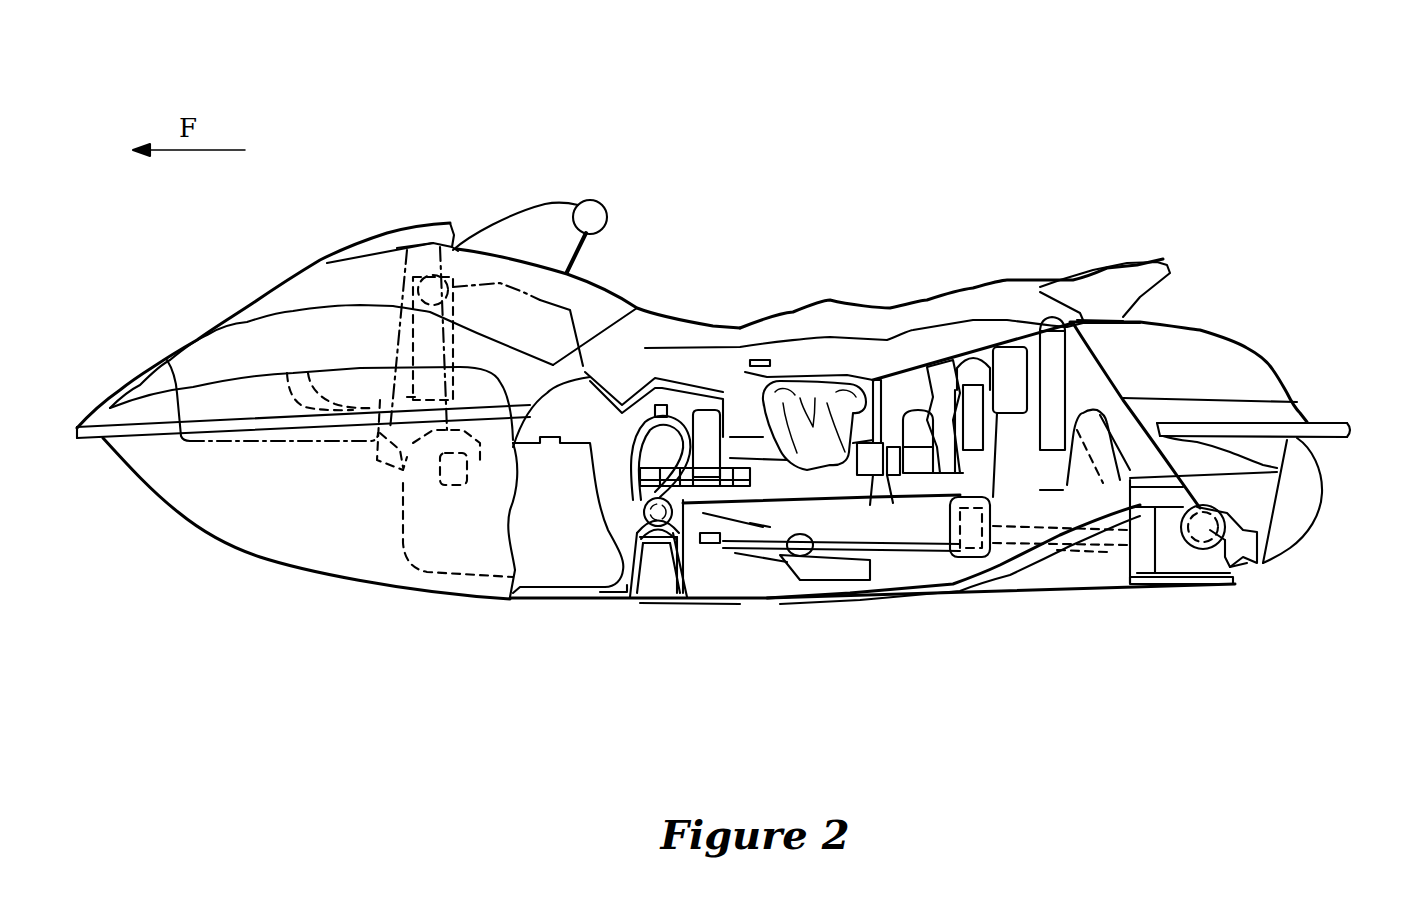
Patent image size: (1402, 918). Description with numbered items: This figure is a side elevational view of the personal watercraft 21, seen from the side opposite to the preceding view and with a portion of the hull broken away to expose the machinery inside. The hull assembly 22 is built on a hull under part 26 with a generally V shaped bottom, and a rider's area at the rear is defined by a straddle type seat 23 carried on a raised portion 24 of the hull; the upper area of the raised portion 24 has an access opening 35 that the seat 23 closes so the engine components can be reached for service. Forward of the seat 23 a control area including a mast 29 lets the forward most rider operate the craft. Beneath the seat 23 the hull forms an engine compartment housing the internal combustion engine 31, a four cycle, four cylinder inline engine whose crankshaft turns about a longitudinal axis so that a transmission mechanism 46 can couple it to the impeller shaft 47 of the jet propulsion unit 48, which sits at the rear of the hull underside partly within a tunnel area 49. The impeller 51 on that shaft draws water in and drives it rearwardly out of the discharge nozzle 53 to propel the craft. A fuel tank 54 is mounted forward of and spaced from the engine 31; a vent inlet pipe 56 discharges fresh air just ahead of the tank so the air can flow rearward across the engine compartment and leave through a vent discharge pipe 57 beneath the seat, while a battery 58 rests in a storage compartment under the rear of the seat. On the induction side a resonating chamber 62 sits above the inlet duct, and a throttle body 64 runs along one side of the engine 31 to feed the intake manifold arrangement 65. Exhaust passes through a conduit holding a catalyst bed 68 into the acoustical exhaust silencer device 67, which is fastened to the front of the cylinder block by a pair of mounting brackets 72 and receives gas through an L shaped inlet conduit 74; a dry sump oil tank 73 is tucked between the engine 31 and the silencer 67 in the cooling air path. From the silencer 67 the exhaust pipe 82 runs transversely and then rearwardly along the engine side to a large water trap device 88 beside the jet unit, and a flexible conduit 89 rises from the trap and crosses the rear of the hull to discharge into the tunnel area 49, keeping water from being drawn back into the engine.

The personal watercraft 21 is at (920, 184).
The hull assembly 22 is at (307, 283).
The straddle type seat 23 is at (870, 307).
The raised portion 24 is at (1217, 335).
The hull under part 26 is at (857, 510).
The mast 29 is at (600, 200).
The internal combustion engine 31 is at (797, 373).
The access opening 35 is at (677, 380).
The transmission mechanism 46 is at (972, 560).
The impeller shaft 47 is at (1090, 562).
The jet propulsion unit 48 is at (1200, 585).
The tunnel area 49 is at (1257, 503).
The impeller 51 is at (1143, 567).
The discharge nozzle 53 is at (1247, 563).
The fuel tank 54 is at (334, 400).
The vent inlet pipe 56 is at (455, 348).
The vent discharge pipe 57 is at (940, 370).
The battery 58 is at (1010, 345).
The resonating chamber 62 is at (918, 420).
The throttle body 64 is at (863, 475).
The intake manifold arrangement 65 is at (783, 493).
The exhaust silencer device 67 is at (630, 440).
The catalyst bed 68 is at (893, 490).
The mounting brackets 72 is at (707, 593).
The dry sump oil tank 73 is at (702, 407).
The inlet conduit 74 is at (640, 515).
The exhaust pipe 82 is at (763, 527).
The water trap device 88 is at (1040, 565).
The flexible conduit 89 is at (1123, 447).